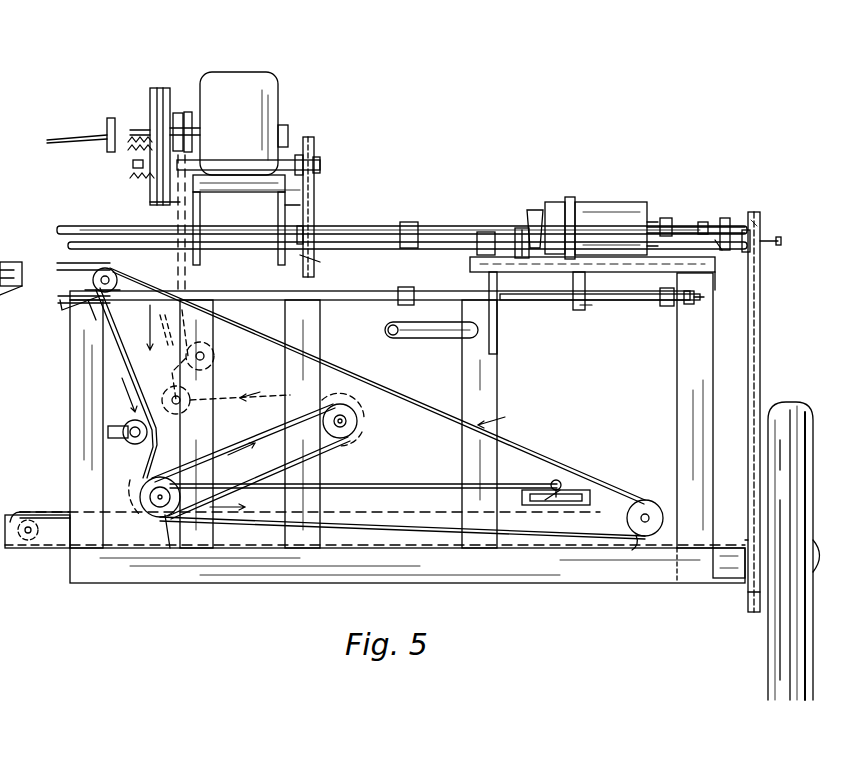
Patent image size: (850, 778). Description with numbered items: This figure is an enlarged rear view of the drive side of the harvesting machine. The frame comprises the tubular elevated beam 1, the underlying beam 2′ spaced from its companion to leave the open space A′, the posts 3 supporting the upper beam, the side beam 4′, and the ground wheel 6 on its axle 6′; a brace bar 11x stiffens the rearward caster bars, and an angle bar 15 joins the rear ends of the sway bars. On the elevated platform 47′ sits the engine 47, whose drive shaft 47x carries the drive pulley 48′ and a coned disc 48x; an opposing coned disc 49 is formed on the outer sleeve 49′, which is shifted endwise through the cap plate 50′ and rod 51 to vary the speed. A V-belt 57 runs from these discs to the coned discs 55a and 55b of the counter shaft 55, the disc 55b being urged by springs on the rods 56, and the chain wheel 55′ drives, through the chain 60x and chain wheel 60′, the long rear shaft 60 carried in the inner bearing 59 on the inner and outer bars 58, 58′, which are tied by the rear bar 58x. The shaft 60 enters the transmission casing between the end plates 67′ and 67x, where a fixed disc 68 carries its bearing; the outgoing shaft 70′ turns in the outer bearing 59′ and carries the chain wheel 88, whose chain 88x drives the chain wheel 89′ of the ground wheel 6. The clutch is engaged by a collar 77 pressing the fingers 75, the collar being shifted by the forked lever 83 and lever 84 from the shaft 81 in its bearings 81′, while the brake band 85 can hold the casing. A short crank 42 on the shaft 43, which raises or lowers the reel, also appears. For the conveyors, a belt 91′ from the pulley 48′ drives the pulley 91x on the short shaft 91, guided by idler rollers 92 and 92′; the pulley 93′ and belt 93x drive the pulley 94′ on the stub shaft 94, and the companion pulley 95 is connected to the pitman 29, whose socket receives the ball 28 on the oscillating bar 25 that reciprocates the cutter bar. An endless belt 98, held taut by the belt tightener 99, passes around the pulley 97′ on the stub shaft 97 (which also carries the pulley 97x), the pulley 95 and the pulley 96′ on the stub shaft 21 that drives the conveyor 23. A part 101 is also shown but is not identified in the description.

The main elevated beam 1 is at (428, 270).
The underlying beam 2′ is at (222, 578).
The posts or uprights 3 is at (78, 455).
The side beam 4′ is at (694, 570).
The ground wheel 6 is at (798, 404).
The axle 6′ is at (816, 545).
The brace bar 11x is at (446, 340).
The angle bar 15 is at (58, 565).
The stub shaft 21 is at (655, 514).
The endless conveyor 23 is at (44, 510).
The oscillating bar 25 is at (578, 494).
The upstanding ball 28 is at (560, 480).
The pitman 29 is at (412, 482).
The short crank 42 is at (720, 248).
The shaft 43 is at (385, 228).
The internal combustion engine 47 is at (239, 123).
The elevated platform 47′ is at (300, 190).
The drive shaft 47x is at (289, 132).
The drive pulley 48′ is at (190, 120).
The coned disc 48x is at (176, 112).
The coned disc 49 is at (150, 100).
The outer sleeve 49′ is at (138, 132).
The cap plate 50′ is at (107, 128).
The rod 51 is at (70, 138).
The counter shaft 55 is at (246, 170).
The chain wheel 55′ is at (314, 152).
The coned disc 55a is at (200, 204).
The coned disc 55b is at (150, 204).
The fixed rods 56 is at (130, 180).
The endless V-belt 57 is at (158, 88).
The inner bar 58 is at (478, 268).
The outer bar 58′ is at (714, 275).
The rear bar 58x is at (625, 275).
The inner bearing 59 is at (487, 237).
The outer bearing 59′ is at (726, 232).
The rear shaft 60 is at (68, 246).
The chain wheel 60′ is at (316, 258).
The endless chain 60x is at (285, 208).
The end plate 67′ is at (646, 210).
The end plate 67x is at (554, 203).
The fixed disc 68 is at (622, 215).
The outgoing shaft 70′ is at (782, 241).
The pressure fingers 75 is at (536, 212).
The collar 77 is at (521, 240).
The shaft 81 is at (362, 300).
The bearings 81′ is at (400, 291).
The forked lever 83 is at (523, 255).
The lever 84 is at (558, 265).
The brake band 85 is at (575, 200).
The chain wheel 88 is at (760, 222).
The endless chain 88x is at (758, 362).
The chain wheel 89′ is at (748, 604).
The short shaft 91 is at (358, 421).
The endless belt 91′ is at (160, 328).
The pulley 91x is at (355, 400).
The idler roller 92 is at (214, 354).
The idler roller 92′ is at (200, 398).
The pulley 93′ is at (346, 440).
The belt 93x is at (265, 482).
The stub shaft 94 is at (162, 518).
The pulley 94′ is at (136, 487).
The pulley 95 is at (170, 548).
The pulley 96′ is at (642, 549).
The stub shaft 97 is at (92, 296).
The pulley 97′ is at (94, 300).
The pulley 97x is at (58, 300).
The endless belt 98 is at (352, 364).
The belt tightener 99 is at (124, 430).
The bar 101 is at (82, 268).
The open space A′ is at (52, 575).